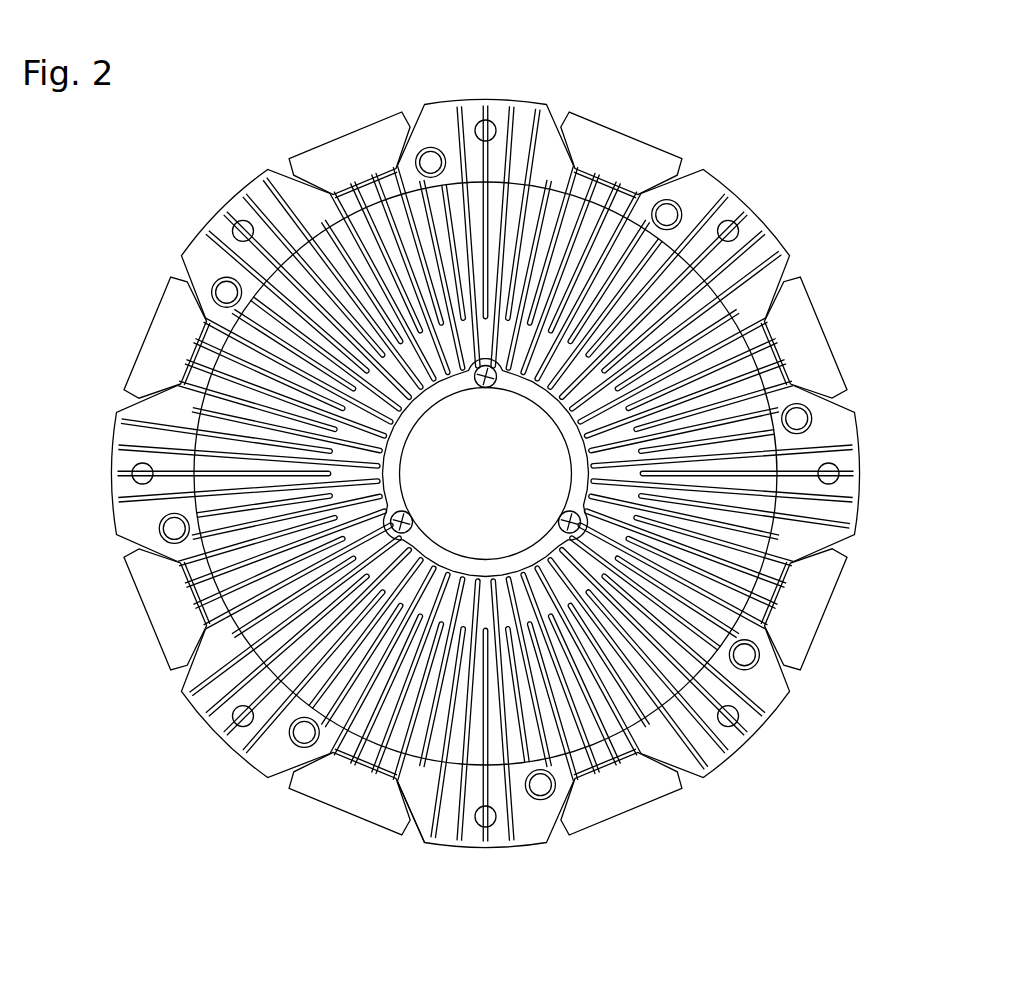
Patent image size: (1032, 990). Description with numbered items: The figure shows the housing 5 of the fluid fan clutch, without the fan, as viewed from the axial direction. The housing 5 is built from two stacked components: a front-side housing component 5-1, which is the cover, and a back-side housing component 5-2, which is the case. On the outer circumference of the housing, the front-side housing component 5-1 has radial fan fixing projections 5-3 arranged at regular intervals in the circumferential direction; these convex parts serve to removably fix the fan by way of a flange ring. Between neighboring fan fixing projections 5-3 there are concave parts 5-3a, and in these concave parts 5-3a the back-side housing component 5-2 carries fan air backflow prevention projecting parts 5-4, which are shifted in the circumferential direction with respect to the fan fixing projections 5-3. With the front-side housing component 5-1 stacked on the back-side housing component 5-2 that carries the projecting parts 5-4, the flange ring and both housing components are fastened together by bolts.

The housing 5 is at (692, 146).
The front-side housing component 5-1 is at (683, 686).
The back-side housing component 5-2 is at (840, 636).
The fan fixing projections 5-3 is at (257, 768).
The concave parts 5-3a is at (566, 804).
The fan air backflow prevention projecting parts 5-4 is at (357, 812).